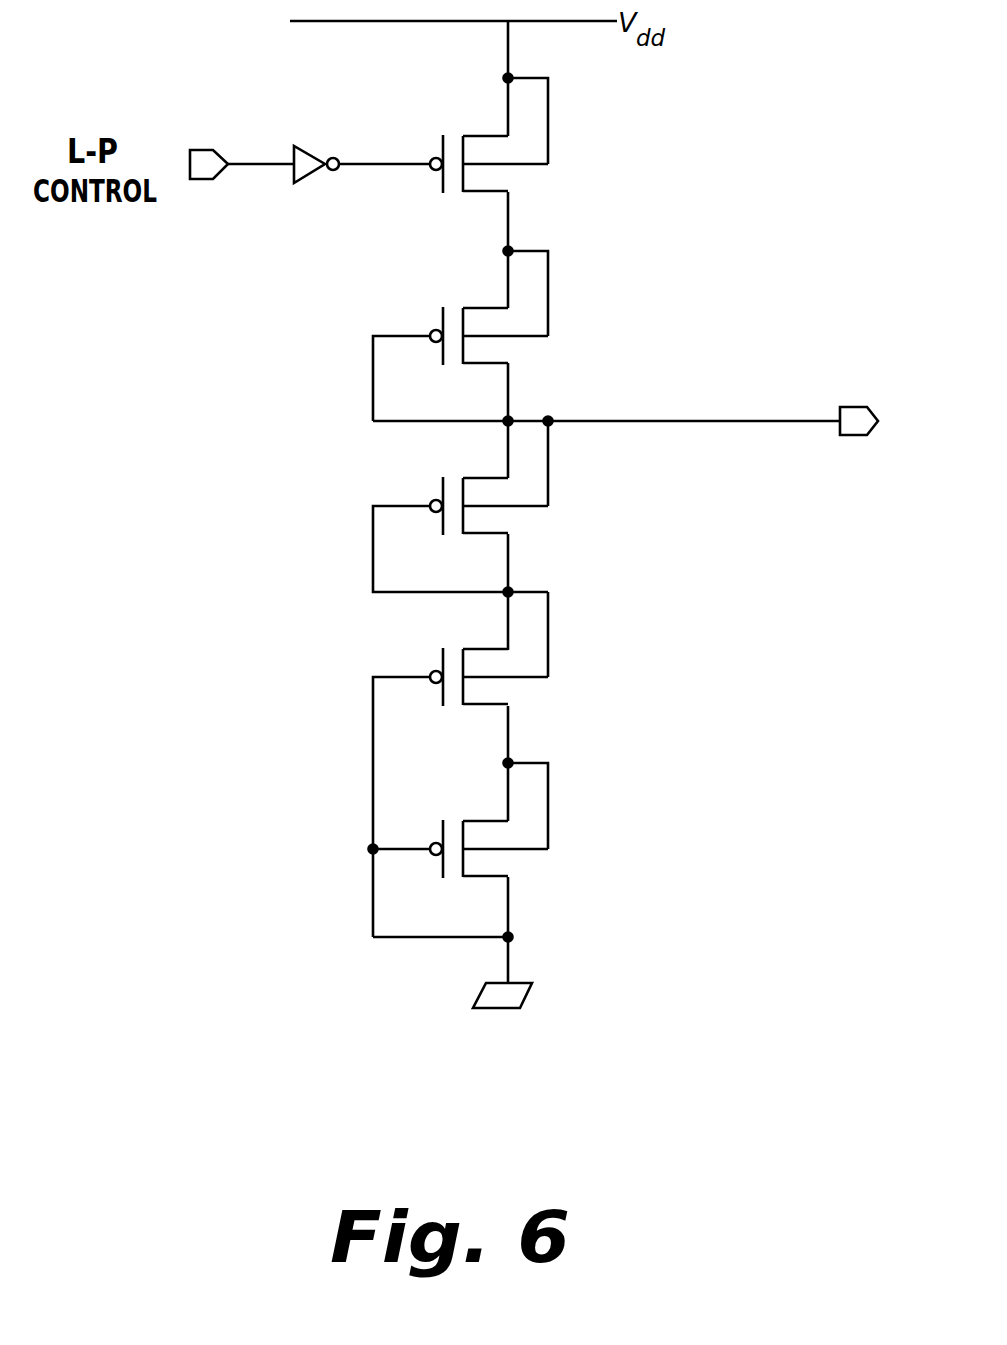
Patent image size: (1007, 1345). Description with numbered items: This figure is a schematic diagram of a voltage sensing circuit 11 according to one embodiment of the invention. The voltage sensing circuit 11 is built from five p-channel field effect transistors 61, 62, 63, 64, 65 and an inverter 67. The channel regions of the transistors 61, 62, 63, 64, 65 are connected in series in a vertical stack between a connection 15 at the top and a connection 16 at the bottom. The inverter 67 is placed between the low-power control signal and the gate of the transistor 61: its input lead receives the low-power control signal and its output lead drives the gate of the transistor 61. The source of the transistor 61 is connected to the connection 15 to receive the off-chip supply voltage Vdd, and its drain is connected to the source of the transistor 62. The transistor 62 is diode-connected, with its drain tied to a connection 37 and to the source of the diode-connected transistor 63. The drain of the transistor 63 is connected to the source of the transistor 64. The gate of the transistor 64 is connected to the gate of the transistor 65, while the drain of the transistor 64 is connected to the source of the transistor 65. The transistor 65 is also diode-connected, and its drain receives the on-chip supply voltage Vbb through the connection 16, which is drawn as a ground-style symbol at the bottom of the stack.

The voltage sensing circuit 11 is at (785, 66).
The connection 15 is at (508, 40).
The connection 16 is at (510, 963).
The connection 37 is at (785, 421).
The transistor 61 is at (590, 146).
The transistor 62 is at (590, 318).
The transistor 63 is at (590, 495).
The transistor 64 is at (590, 663).
The transistor 65 is at (590, 838).
The inverter 67 is at (314, 175).